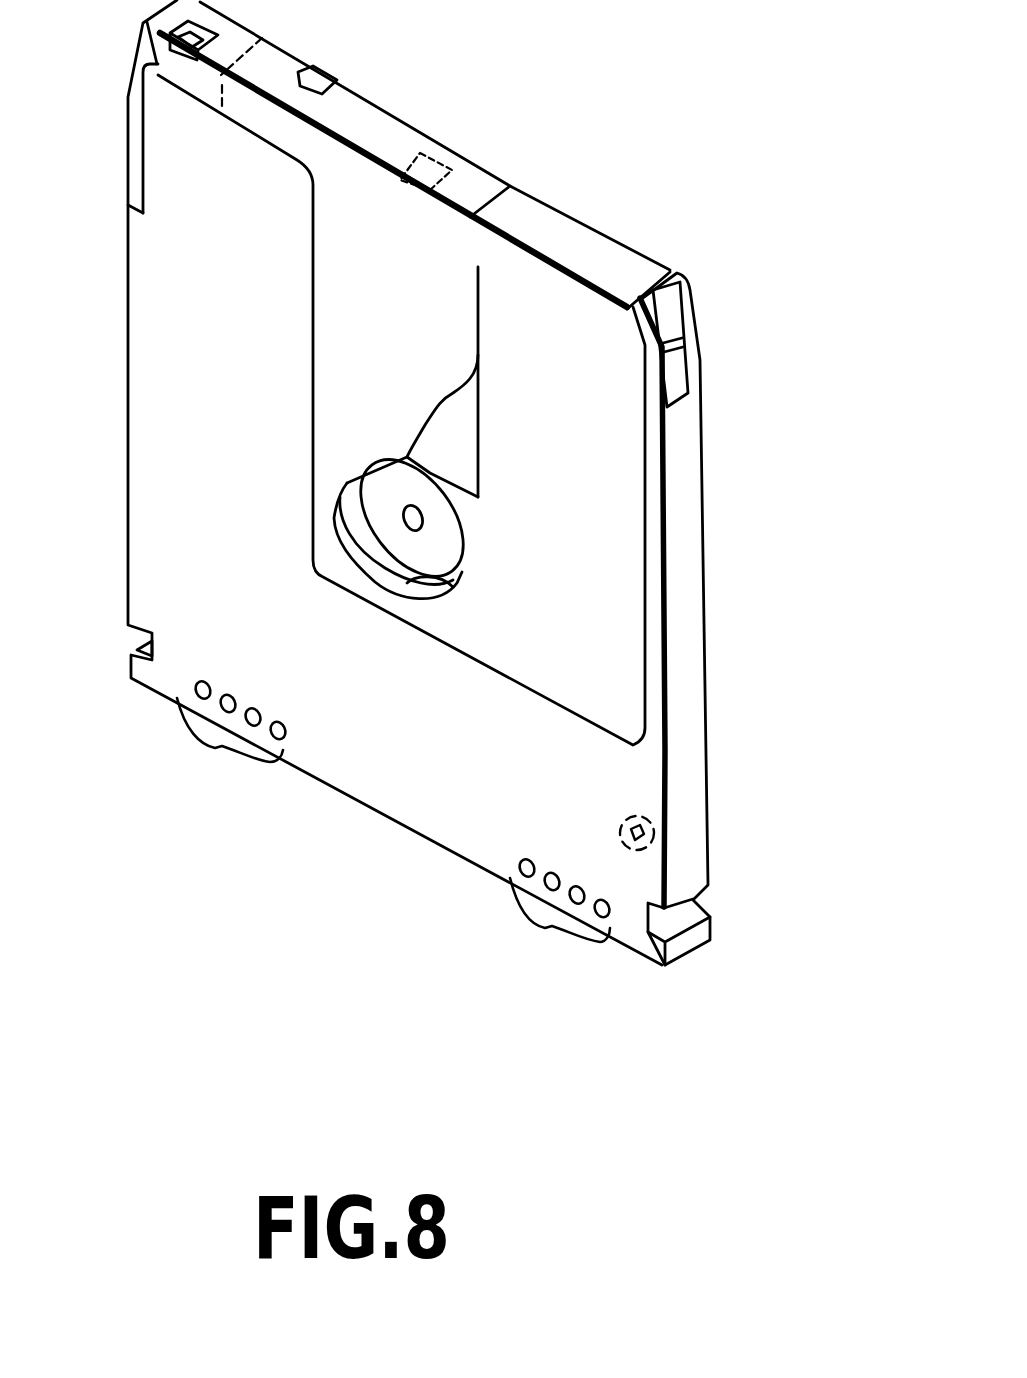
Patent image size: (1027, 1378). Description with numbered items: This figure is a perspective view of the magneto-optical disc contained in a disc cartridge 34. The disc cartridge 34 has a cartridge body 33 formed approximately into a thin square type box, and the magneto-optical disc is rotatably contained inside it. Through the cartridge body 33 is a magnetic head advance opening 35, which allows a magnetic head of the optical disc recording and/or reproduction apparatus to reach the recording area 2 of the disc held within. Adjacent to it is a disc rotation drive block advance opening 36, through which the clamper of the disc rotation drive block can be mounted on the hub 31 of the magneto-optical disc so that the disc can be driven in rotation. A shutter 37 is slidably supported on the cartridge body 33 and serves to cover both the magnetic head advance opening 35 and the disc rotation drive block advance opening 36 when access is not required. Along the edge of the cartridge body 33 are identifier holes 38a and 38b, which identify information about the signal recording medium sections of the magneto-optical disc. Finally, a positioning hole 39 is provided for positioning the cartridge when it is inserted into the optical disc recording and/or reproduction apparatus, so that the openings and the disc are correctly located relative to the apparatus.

The recording area 2 is at (458, 443).
The hub 31 is at (433, 537).
The cartridge body 33 is at (603, 267).
The disc cartridge 34 is at (383, 917).
The magnetic head advance opening 35 is at (470, 400).
The disc rotation drive block advance opening 36 is at (460, 587).
The shutter 37 is at (387, 128).
The identifier hole 38a is at (232, 745).
The identifier hole 38b is at (557, 922).
The positioning hole 39 is at (647, 831).